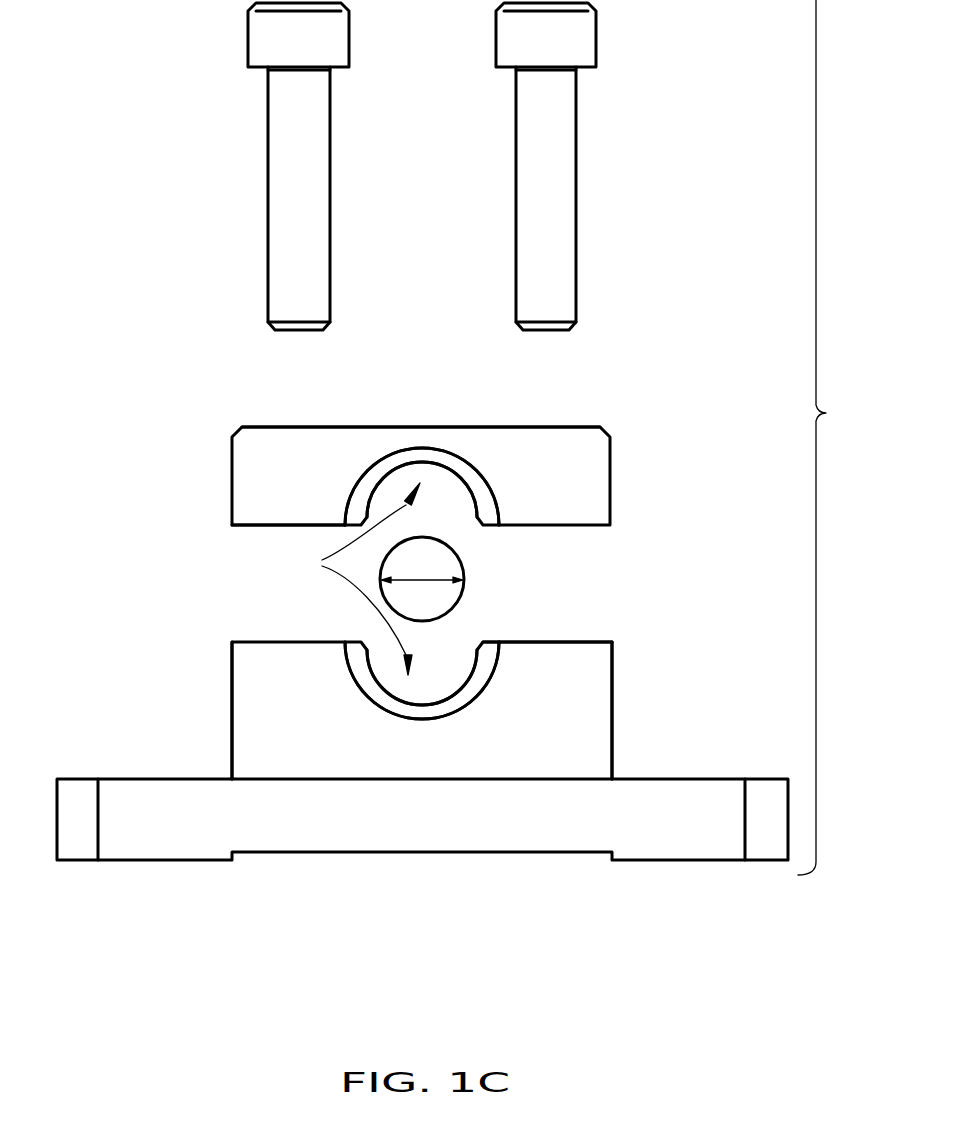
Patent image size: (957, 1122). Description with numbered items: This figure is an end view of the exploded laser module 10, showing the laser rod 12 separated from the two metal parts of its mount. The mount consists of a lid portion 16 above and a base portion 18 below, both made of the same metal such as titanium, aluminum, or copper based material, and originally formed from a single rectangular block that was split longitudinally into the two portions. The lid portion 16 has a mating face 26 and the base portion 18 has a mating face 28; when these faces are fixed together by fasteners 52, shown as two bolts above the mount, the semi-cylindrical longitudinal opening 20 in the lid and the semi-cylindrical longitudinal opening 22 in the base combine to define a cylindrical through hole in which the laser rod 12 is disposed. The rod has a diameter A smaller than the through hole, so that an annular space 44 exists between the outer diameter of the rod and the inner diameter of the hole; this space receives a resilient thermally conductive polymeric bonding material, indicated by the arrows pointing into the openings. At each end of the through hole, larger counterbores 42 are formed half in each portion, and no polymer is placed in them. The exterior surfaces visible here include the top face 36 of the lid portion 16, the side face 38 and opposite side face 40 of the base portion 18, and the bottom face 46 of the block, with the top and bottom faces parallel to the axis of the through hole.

The laser module 10 is at (834, 437).
The laser rod 12 is at (466, 580).
The lid portion 16 is at (597, 468).
The base portion 18 is at (578, 713).
The semi-cylindrical longitudinal opening 20 is at (450, 494).
The semi-cylindrical longitudinal opening 22 is at (385, 663).
The mating face 26 is at (592, 525).
The mating face 28 is at (570, 642).
The top face 36 is at (258, 427).
The side face 38 is at (612, 748).
The side face 40 is at (232, 718).
The counterbore 42 is at (402, 465).
The annular space 44 is at (354, 579).
The bottom face 46 is at (175, 858).
The fastener 52 is at (578, 130).